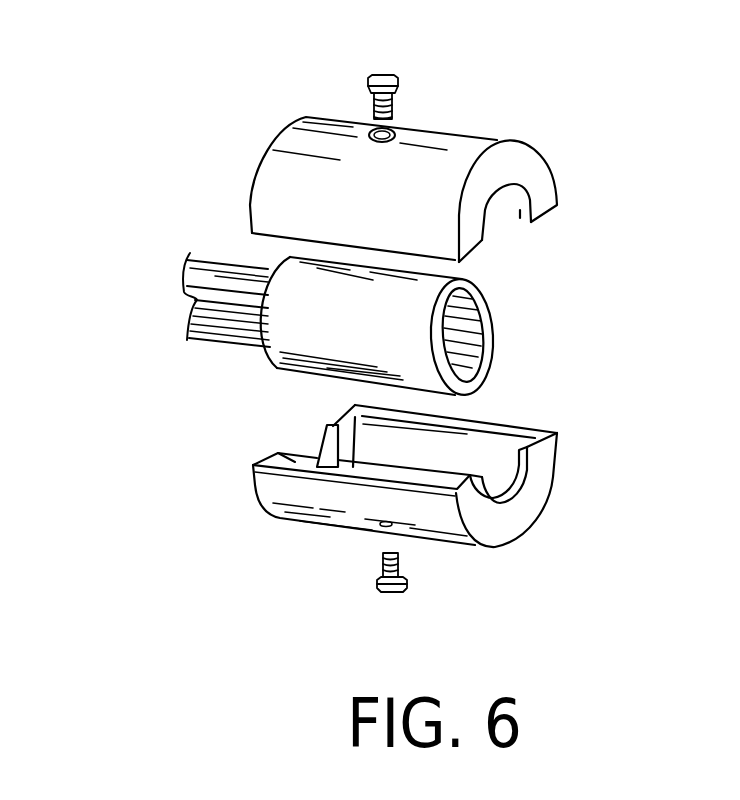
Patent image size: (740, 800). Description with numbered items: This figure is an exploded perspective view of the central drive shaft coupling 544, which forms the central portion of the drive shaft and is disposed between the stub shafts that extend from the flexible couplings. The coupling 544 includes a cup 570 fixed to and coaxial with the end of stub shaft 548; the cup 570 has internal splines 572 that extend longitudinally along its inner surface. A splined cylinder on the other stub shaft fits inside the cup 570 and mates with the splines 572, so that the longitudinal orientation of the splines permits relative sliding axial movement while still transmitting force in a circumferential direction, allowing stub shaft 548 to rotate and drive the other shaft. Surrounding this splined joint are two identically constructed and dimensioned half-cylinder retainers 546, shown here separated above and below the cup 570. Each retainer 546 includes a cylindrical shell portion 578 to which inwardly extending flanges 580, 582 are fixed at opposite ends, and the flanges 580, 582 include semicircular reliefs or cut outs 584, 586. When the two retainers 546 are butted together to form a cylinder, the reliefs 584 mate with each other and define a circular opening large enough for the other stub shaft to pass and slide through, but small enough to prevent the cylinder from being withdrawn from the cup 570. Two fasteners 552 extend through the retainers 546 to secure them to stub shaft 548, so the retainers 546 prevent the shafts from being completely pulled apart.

The central drive shaft coupling 544 is at (166, 92).
The retainer 546 is at (272, 493).
The stub shaft 548 is at (213, 267).
The fastener 552 is at (390, 73).
The cup 570 is at (486, 320).
The internal splines 572 is at (470, 352).
The cylindrical shell portion 578 is at (468, 152).
The flange 580 is at (520, 166).
The flange 582 is at (337, 424).
The semicircular relief 584 is at (521, 218).
The semicircular relief 586 is at (322, 466).